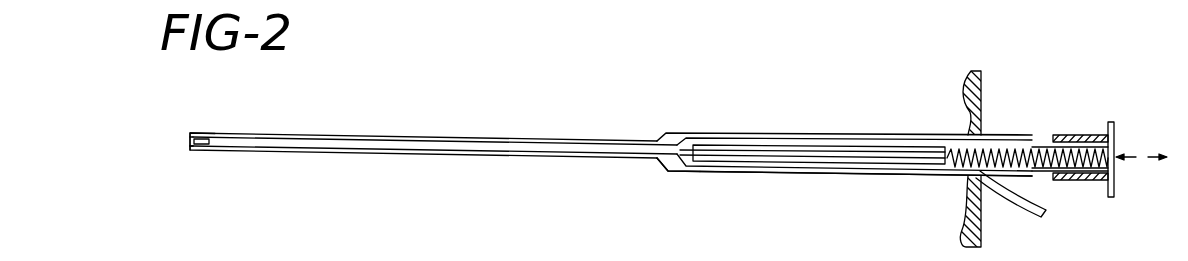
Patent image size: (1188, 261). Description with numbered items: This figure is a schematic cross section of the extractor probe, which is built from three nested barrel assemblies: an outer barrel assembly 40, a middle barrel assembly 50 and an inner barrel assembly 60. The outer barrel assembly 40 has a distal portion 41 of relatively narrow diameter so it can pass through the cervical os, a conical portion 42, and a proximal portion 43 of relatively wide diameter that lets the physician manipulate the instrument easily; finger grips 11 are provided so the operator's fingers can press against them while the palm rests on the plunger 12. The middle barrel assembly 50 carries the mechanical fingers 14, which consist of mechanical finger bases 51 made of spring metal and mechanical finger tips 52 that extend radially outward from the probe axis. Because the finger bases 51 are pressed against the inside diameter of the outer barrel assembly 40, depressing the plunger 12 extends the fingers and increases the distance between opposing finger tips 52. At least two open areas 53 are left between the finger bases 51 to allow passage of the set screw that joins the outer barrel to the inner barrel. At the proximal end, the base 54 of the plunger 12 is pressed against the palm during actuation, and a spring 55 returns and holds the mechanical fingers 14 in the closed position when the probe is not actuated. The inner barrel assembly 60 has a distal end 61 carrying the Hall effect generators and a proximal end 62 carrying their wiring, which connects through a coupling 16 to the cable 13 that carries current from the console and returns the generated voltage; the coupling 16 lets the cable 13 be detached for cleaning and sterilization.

The finger grips 11 is at (972, 71).
The plunger 12 is at (1079, 133).
The cable 13 is at (1031, 211).
The mechanical fingers 14 is at (192, 147).
The coupling 16 is at (972, 152).
The outer barrel assembly 40 is at (659, 134).
The distal portion 41 is at (333, 134).
The conical portion 42 is at (662, 171).
The proximal portion 43 is at (810, 177).
The middle barrel assembly 50 is at (685, 137).
The mechanical finger bases 51 is at (195, 132).
The mechanical finger tips 52 is at (189, 137).
The open areas 53 is at (629, 139).
The base of the plunger 54 is at (1115, 130).
The spring 55 is at (1044, 168).
The inner barrel assembly 60 is at (749, 146).
The distal end 61 is at (206, 147).
The proximal end 62 is at (848, 152).